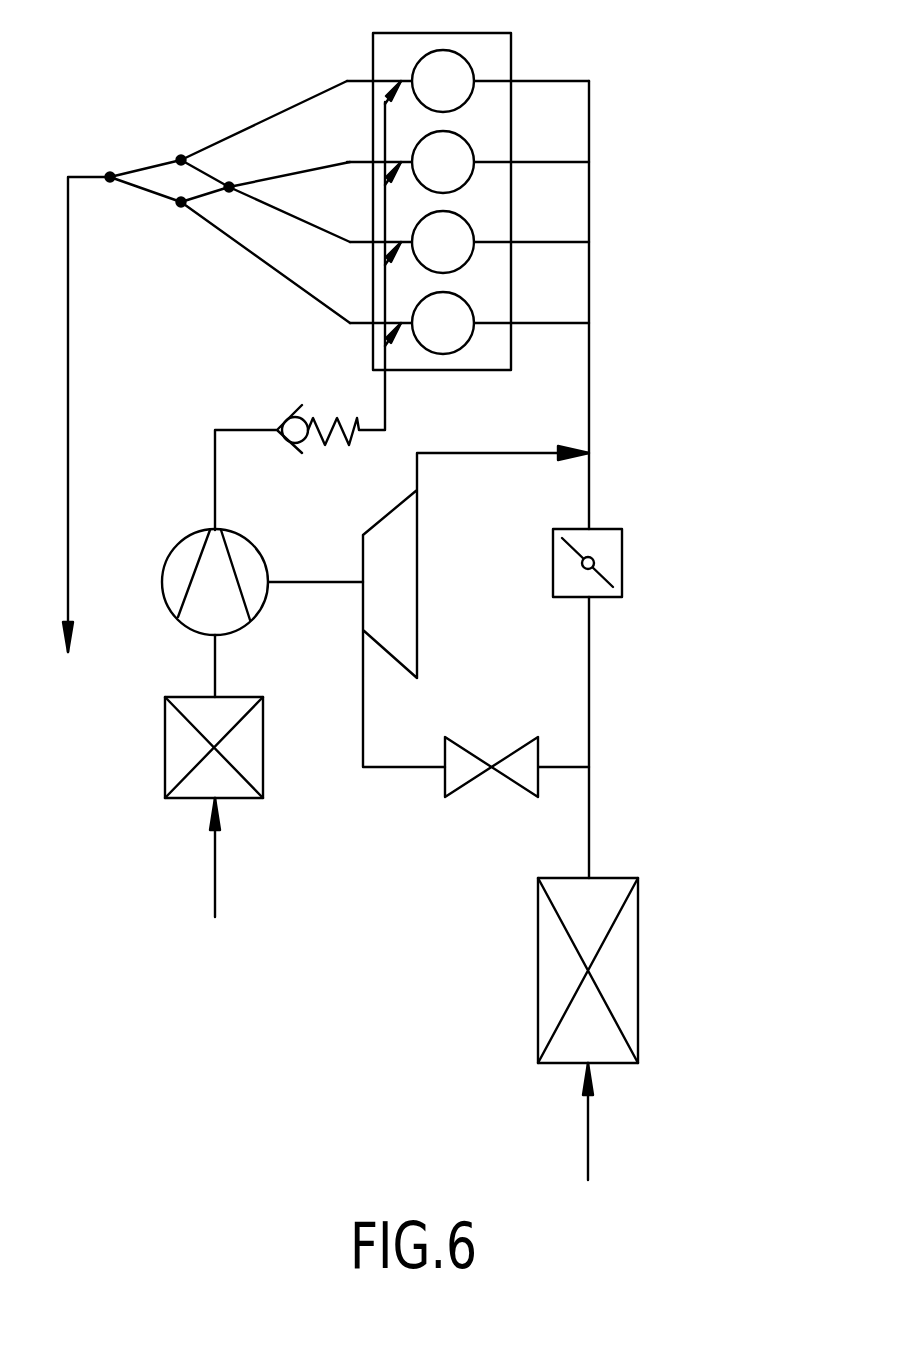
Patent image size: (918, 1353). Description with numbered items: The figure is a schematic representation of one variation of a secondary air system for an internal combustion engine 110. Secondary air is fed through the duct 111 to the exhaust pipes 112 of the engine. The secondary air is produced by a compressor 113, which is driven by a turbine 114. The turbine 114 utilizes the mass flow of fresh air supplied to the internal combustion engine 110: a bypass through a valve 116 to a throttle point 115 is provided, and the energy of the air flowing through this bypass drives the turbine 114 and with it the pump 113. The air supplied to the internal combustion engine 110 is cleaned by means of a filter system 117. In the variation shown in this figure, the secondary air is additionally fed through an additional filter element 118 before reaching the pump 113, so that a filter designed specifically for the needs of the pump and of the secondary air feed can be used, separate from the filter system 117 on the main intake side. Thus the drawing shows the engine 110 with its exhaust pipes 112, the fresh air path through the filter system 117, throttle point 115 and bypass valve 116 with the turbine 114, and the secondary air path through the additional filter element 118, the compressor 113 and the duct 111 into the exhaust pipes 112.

The internal combustion engine 110 is at (503, 48).
The duct 111 is at (385, 390).
The exhaust pipes 112 is at (268, 78).
The compressor 113 is at (203, 608).
The turbine 114 is at (403, 609).
The throttle point 115 is at (617, 565).
The valve 116 is at (465, 773).
The filter system 117 is at (603, 887).
The additional filter element 118 is at (180, 755).